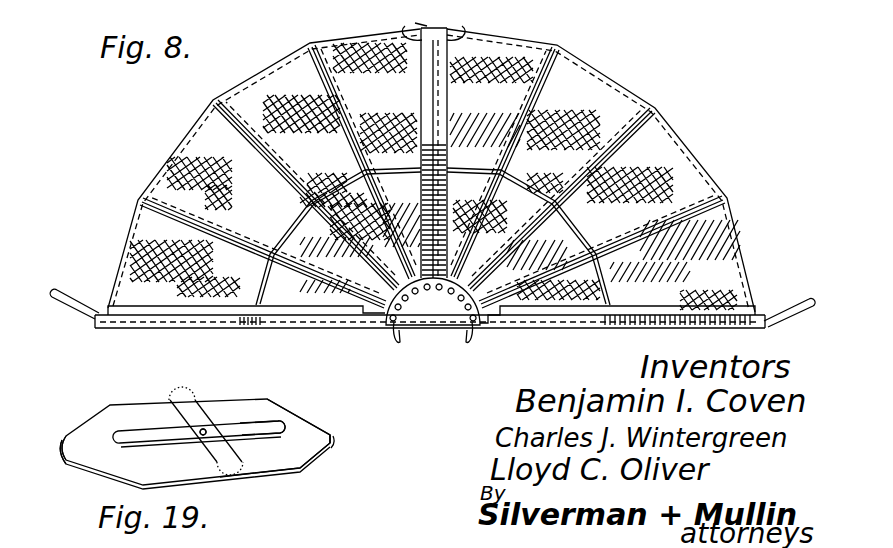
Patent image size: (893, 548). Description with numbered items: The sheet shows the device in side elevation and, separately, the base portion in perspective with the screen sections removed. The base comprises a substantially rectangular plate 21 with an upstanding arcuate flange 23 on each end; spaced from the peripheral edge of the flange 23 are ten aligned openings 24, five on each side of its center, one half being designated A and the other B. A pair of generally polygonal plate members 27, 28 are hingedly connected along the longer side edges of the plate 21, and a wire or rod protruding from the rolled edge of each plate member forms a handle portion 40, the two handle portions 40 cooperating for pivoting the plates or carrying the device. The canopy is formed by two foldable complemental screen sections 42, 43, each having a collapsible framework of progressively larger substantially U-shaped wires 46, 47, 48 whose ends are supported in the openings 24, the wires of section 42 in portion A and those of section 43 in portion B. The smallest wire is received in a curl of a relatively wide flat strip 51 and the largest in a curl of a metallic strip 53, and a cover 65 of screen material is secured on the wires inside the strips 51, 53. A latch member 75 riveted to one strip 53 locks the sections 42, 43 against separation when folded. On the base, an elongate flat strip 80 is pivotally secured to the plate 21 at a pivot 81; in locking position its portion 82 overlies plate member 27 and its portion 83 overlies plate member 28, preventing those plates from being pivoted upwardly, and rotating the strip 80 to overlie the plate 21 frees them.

In FIG. 8, the arcuate flange 23 is at (457, 320).
In FIG. 19, the arcuate flange 23 is at (238, 474).
In FIG. 8, the openings 24 is at (473, 333).
In FIG. 8, the handle portion 40 is at (787, 327).
In FIG. 19, the handle portion 40 is at (331, 437).
In FIG. 8, the screen section 42 is at (207, 137).
In FIG. 8, the screen section 43 is at (667, 160).
In FIG. 8, the U-shaped wire 46 is at (160, 175).
In FIG. 8, the U-shaped wire 47 is at (640, 117).
In FIG. 8, the U-shaped wire 48 is at (570, 57).
In FIG. 8, the flat strip 51 is at (683, 320).
In FIG. 8, the metallic strip 53 is at (450, 38).
In FIG. 8, the cover 65 is at (581, 112).
In FIG. 8, the latch member 75 is at (442, 28).
In FIG. 8, the flat strip 80 is at (550, 334).
In FIG. 19, the flat strip 80 is at (198, 427).
In FIG. 19, the rectangular plate 21 is at (206, 431).
In FIG. 19, the plate member 27 is at (195, 444).
In FIG. 19, the plate member 28 is at (275, 438).
In FIG. 19, the pivot 81 is at (205, 427).
In FIG. 19, the portion of strip 82 is at (133, 432).
In FIG. 19, the portion of strip 83 is at (240, 422).